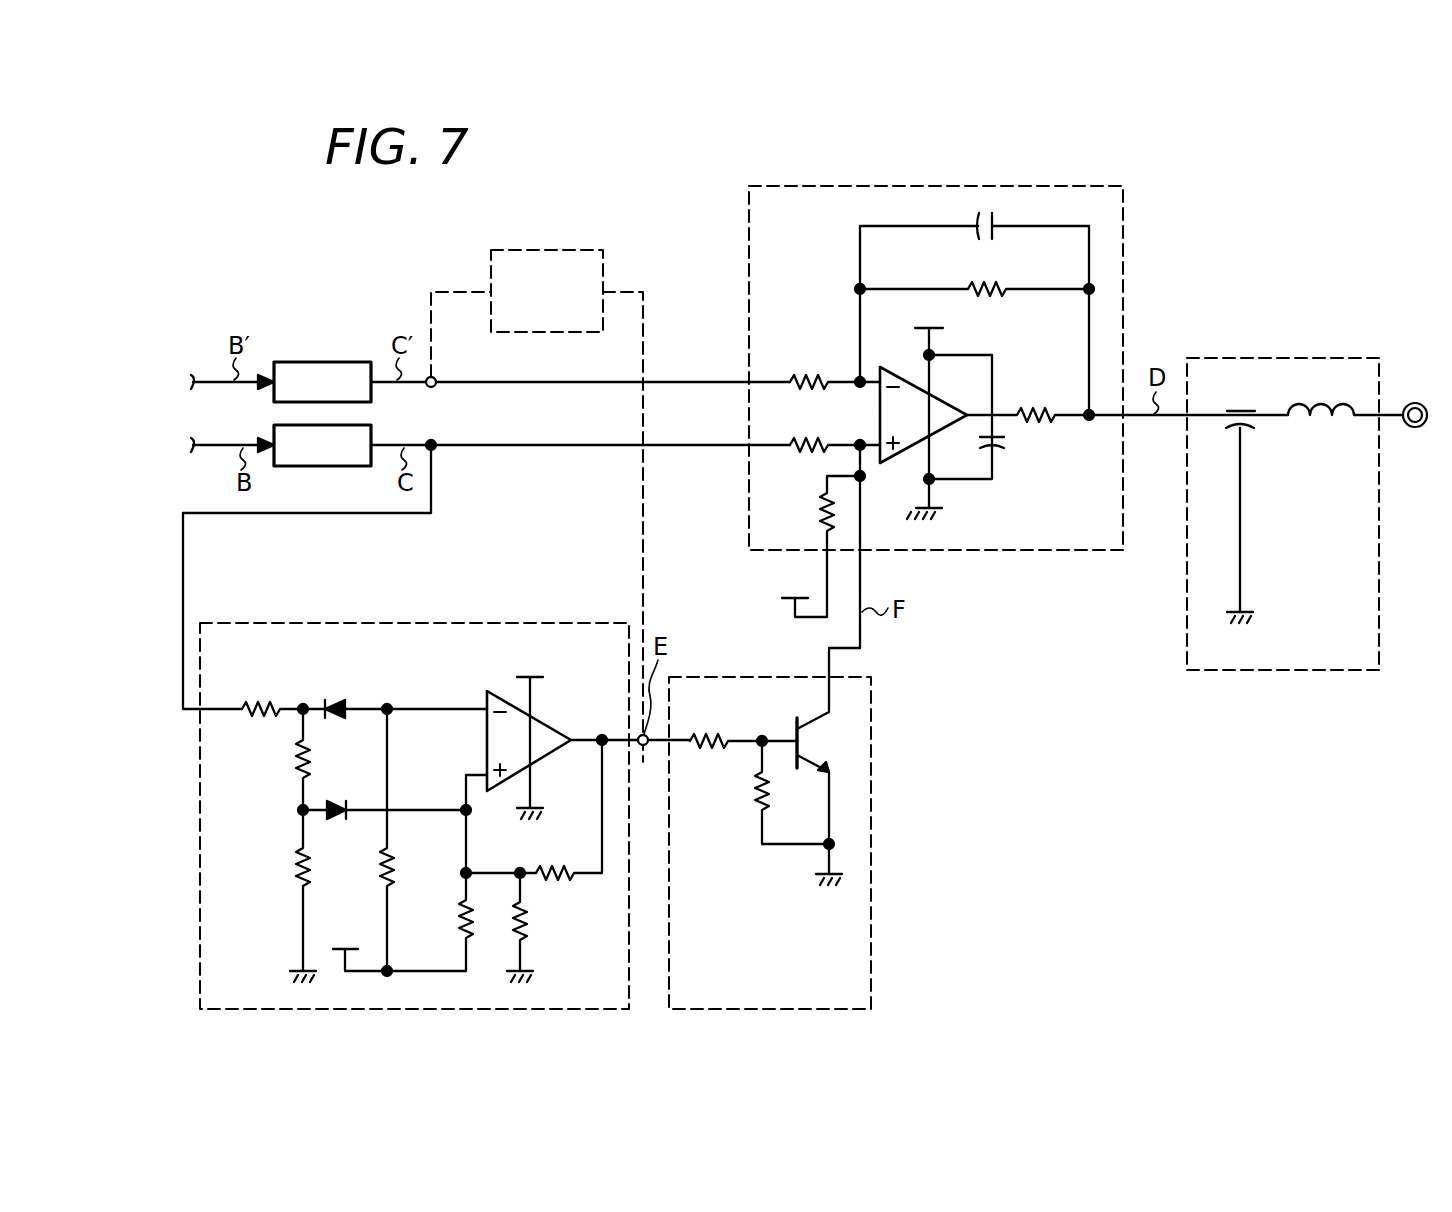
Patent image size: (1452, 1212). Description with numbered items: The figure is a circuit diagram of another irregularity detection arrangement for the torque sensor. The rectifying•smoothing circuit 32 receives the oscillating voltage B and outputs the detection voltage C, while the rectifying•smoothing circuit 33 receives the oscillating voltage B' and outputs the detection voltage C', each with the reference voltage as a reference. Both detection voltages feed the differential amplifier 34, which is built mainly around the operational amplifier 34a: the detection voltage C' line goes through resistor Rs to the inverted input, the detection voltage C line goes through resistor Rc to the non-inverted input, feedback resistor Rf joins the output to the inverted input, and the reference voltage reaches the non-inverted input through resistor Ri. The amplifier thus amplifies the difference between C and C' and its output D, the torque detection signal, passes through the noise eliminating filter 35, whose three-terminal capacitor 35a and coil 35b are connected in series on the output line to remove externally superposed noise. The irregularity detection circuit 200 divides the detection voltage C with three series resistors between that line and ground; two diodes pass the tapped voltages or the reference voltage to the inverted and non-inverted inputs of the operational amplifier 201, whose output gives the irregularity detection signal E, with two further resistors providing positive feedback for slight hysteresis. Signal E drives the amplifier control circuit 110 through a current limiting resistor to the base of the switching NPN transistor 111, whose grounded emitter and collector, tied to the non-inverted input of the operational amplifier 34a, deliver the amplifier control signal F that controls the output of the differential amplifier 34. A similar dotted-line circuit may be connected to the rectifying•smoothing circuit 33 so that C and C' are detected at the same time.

The rectifying•smoothing circuit 33 is at (320, 362).
The rectifying•smoothing circuit 32 is at (318, 466).
The differential amplifier 34 is at (1123, 222).
The operational amplifier 34a is at (905, 380).
The noise eliminating filter 35 is at (1328, 358).
The capacitor 35a is at (1250, 430).
The coil 35b is at (1313, 427).
The irregularity detection circuit 200 is at (449, 623).
The operational amplifier 201 is at (548, 727).
The amplifier control circuit 110 is at (873, 952).
The switching NPN transistor 111 is at (793, 724).